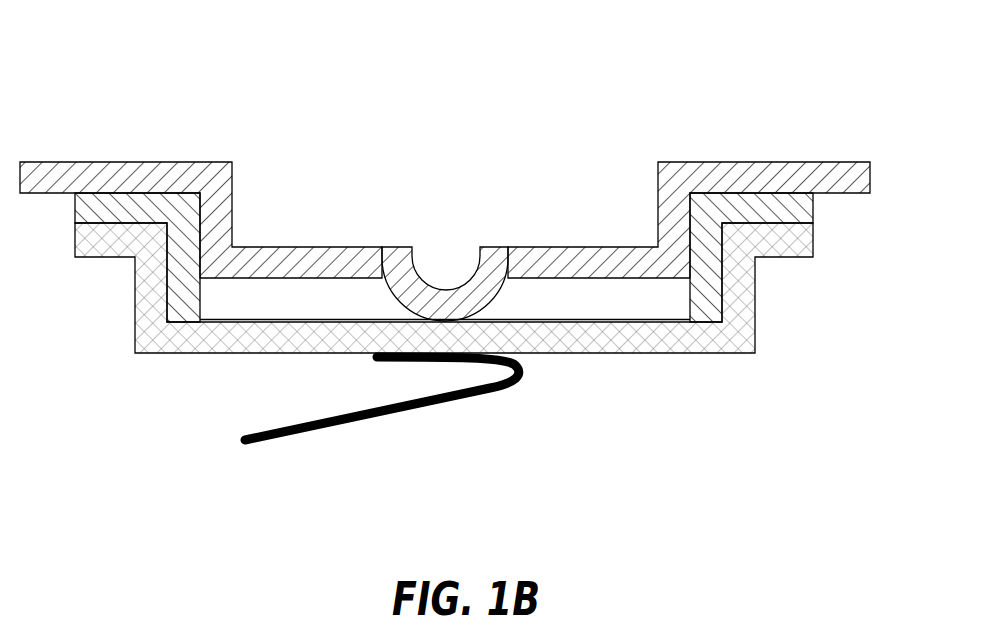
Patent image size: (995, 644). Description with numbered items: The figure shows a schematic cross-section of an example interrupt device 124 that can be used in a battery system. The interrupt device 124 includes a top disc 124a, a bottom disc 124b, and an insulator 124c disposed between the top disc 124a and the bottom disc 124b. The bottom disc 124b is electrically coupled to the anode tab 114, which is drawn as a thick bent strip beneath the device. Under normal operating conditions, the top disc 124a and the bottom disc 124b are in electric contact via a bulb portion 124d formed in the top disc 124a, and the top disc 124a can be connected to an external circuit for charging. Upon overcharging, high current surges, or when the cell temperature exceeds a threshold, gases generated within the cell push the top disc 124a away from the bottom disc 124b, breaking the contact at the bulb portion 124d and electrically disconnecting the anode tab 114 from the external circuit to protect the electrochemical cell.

The interrupt device 124 is at (461, 251).
The top disc 124a is at (769, 158).
The bottom disc 124b is at (626, 360).
The insulator 124c is at (718, 297).
The bulb portion 124d is at (455, 256).
The anode tab 114 is at (410, 413).